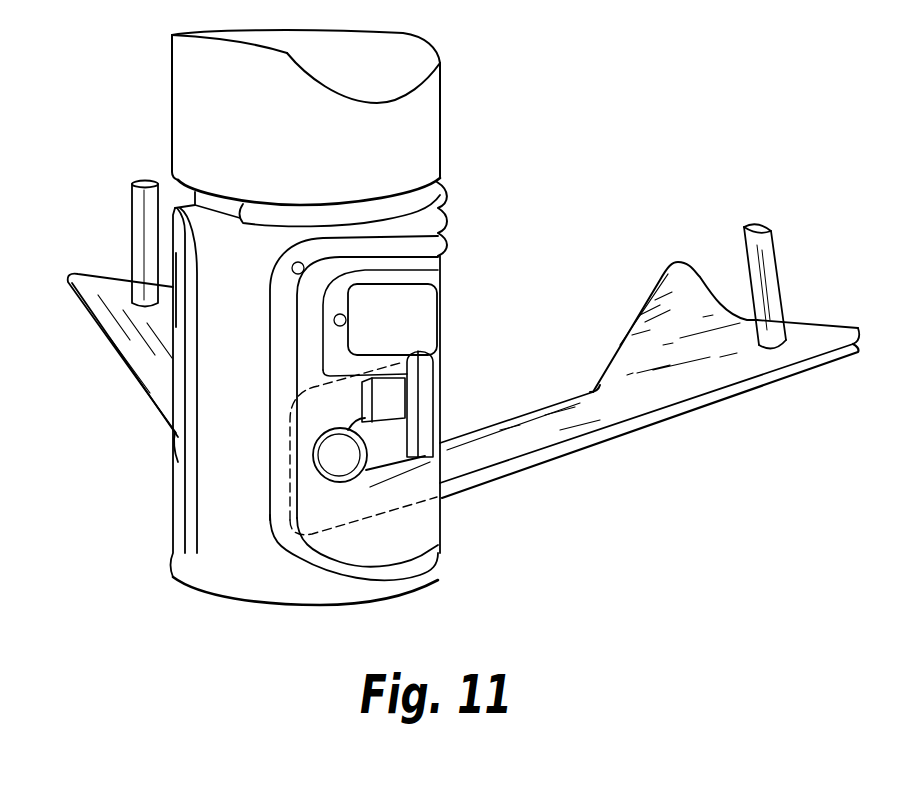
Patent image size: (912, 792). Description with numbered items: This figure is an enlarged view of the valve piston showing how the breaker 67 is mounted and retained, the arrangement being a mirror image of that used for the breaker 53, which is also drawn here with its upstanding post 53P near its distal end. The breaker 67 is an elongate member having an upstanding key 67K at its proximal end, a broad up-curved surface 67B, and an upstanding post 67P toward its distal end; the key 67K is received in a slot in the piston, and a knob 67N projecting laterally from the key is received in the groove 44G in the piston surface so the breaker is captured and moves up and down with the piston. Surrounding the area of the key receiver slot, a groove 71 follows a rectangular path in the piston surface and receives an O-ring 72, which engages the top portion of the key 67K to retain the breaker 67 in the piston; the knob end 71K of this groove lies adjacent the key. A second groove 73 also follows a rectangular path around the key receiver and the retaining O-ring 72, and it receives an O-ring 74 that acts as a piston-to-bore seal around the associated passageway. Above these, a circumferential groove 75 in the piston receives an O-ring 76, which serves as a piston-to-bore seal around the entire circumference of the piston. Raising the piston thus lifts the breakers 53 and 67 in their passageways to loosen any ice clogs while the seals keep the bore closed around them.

The O-ring 76 is at (437, 190).
The circumferential groove 75 is at (183, 195).
The O-ring 74 is at (322, 243).
The O-ring 72 is at (440, 244).
The groove 71 is at (383, 362).
The window 71K is at (418, 298).
The key 67K is at (420, 378).
The pin 67N is at (343, 465).
The groove 73 is at (283, 517).
The groove 44G is at (452, 415).
The breaker 67 is at (640, 403).
The bump 67B is at (684, 283).
The pin post 67P is at (776, 264).
The breaker 53 is at (122, 342).
The upstanding post 53P is at (132, 218).